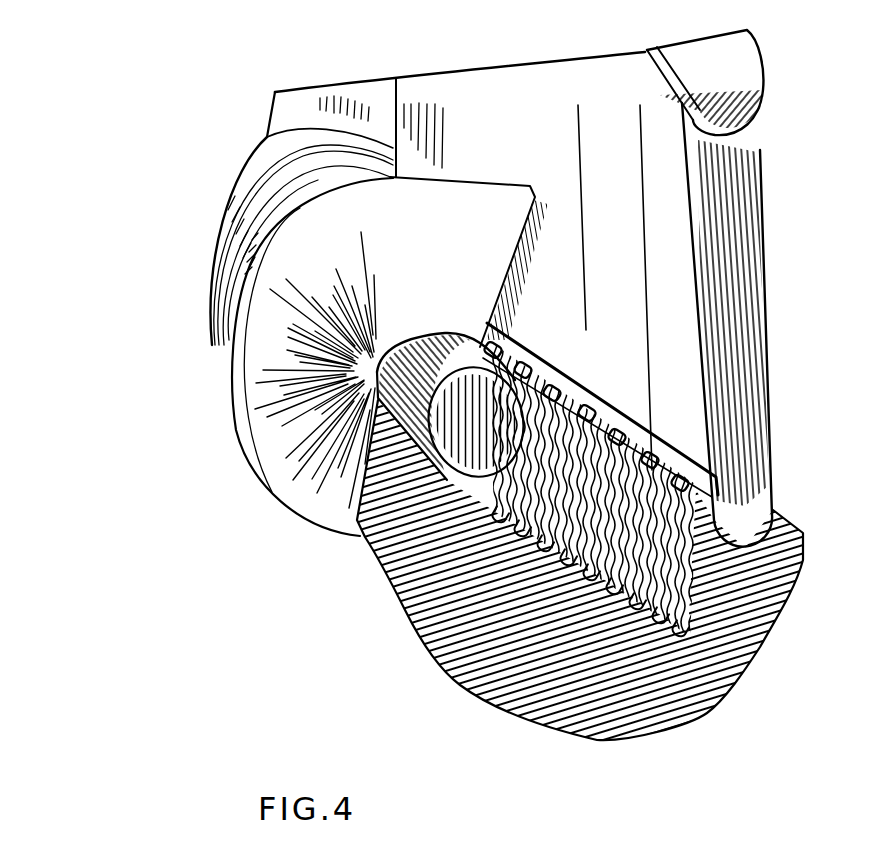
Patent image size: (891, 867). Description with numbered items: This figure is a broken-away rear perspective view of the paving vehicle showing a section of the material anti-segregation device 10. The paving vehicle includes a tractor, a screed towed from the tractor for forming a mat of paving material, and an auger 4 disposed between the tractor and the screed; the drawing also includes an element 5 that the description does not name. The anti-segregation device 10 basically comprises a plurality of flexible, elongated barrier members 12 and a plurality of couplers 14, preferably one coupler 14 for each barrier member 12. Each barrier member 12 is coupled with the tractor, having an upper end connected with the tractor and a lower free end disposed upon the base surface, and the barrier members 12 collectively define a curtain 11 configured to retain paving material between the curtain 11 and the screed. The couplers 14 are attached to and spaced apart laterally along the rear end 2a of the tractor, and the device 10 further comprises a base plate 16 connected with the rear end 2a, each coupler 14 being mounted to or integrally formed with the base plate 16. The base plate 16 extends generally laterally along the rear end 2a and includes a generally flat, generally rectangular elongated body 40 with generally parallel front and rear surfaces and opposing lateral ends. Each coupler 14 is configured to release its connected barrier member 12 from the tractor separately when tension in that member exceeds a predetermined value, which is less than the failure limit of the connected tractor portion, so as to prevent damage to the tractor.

The auger 4 is at (185, 184).
The rear end of the tractor 2a is at (673, 238).
The material anti-segregation device 10 is at (768, 407).
The curtain 11 is at (466, 538).
The knitted fabric 5 is at (803, 540).
The barrier member 12 is at (497, 540).
The base plate 16 is at (572, 370).
The elongated body 40 is at (613, 408).
The coupler 14 is at (531, 362).